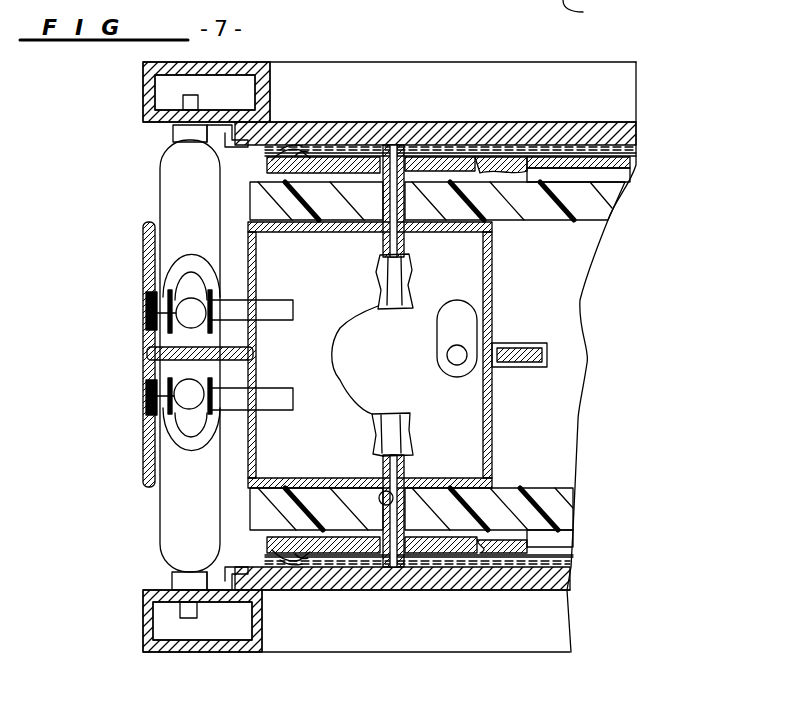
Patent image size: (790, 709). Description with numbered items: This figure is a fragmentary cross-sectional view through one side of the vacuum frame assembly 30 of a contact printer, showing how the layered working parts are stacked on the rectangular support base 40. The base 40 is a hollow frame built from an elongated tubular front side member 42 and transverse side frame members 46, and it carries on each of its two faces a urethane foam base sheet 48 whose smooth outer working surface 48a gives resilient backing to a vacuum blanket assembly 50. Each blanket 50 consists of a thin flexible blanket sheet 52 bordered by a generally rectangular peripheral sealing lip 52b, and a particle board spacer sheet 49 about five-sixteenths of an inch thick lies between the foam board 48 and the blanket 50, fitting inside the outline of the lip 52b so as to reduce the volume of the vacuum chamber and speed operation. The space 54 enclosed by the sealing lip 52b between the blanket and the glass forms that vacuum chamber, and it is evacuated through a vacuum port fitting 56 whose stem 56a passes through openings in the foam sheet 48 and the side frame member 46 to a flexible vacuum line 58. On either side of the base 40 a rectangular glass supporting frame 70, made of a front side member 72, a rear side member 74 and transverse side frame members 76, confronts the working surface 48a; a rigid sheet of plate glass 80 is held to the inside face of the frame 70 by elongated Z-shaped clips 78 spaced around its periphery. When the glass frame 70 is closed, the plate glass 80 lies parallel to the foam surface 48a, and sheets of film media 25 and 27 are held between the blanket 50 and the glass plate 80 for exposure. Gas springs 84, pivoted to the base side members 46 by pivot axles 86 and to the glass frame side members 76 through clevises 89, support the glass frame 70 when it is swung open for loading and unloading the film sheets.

The sheet of film media 25 is at (332, 145).
The sheet of film media 27 is at (548, 154).
The vacuum frame assembly 30 is at (129, 362).
The support base 40 is at (250, 240).
The front side member 42 is at (537, 480).
The side frame member 46 is at (493, 311).
The base sheet 48 is at (620, 200).
The outer working surface 48a is at (262, 163).
The particle board spacer sheet 49 is at (625, 173).
The vacuum blanket assembly 50 is at (634, 152).
The blanket sheet 52 is at (476, 165).
The peripheral sealing lip 52b is at (304, 152).
The space 54 is at (455, 172).
The vacuum port fitting 56 is at (393, 143).
The stem 56a is at (376, 240).
The flexible vacuum line 58 is at (348, 360).
The glass supporting frame 70 is at (302, 0).
The front side member 72 is at (463, 633).
The rear side member 74 is at (588, 13).
The side frame member 76 is at (143, 93).
The clip 78 is at (215, 138).
The plate glass 80 is at (540, 137).
The gas spring 84 is at (173, 226).
The pivot axle 86 is at (147, 310).
The clevis 89 is at (172, 132).